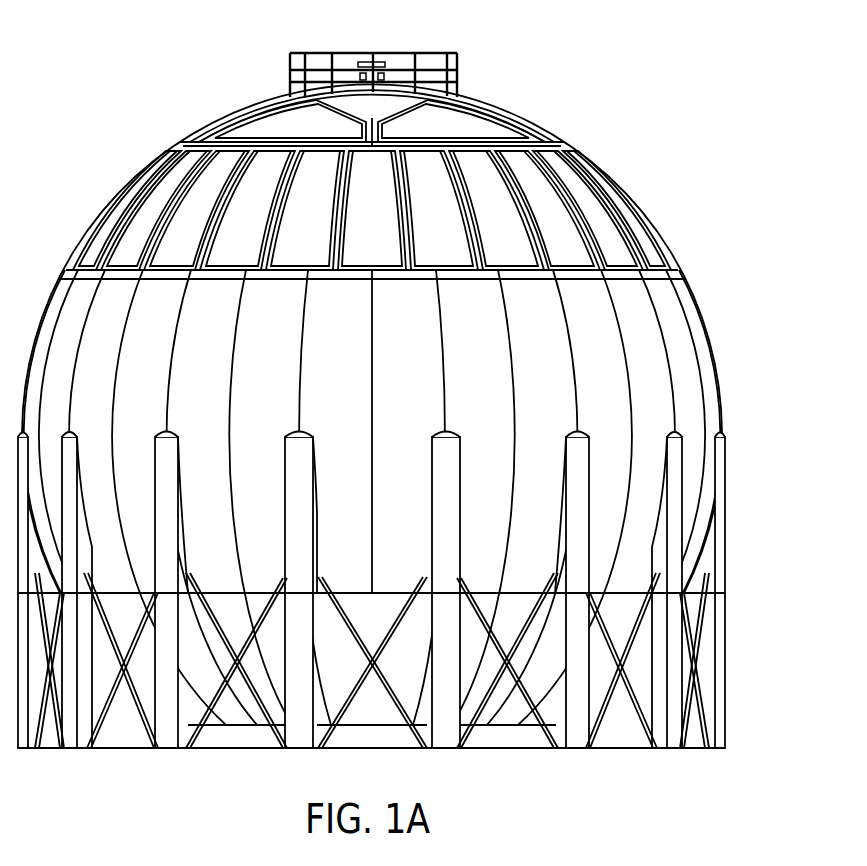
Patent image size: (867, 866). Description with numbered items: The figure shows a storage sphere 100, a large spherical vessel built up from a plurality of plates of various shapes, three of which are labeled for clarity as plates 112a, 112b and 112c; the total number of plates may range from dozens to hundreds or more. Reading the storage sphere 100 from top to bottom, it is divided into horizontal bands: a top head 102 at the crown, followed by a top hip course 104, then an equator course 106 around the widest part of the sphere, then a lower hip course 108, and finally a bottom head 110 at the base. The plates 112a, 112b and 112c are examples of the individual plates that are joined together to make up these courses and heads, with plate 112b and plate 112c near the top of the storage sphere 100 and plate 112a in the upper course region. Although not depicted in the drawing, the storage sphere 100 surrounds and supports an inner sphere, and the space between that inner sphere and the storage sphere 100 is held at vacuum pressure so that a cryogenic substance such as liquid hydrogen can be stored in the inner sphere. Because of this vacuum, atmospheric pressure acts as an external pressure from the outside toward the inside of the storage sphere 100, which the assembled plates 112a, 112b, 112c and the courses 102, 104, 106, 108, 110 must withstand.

The storage sphere 100 is at (178, 68).
The top head 102 is at (457, 84).
The top hip course 104 is at (430, 265).
The equator course 106 is at (791, 448).
The lower hip course 108 is at (655, 595).
The bottom head 110 is at (565, 725).
The plate 112a is at (216, 280).
The plate 112b is at (279, 90).
The plate 112c is at (192, 117).